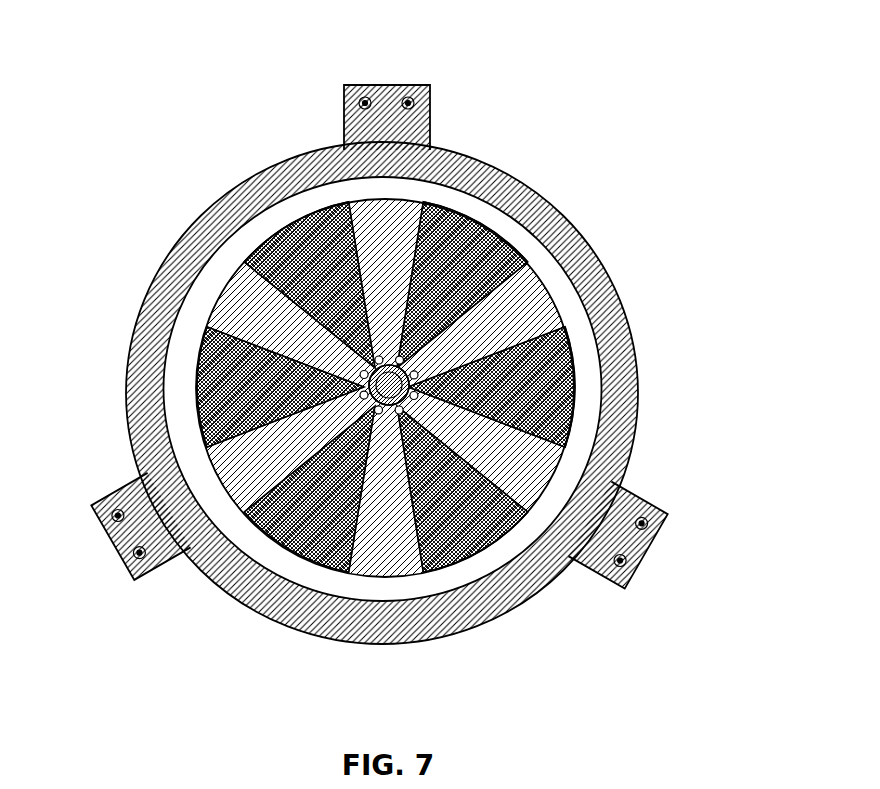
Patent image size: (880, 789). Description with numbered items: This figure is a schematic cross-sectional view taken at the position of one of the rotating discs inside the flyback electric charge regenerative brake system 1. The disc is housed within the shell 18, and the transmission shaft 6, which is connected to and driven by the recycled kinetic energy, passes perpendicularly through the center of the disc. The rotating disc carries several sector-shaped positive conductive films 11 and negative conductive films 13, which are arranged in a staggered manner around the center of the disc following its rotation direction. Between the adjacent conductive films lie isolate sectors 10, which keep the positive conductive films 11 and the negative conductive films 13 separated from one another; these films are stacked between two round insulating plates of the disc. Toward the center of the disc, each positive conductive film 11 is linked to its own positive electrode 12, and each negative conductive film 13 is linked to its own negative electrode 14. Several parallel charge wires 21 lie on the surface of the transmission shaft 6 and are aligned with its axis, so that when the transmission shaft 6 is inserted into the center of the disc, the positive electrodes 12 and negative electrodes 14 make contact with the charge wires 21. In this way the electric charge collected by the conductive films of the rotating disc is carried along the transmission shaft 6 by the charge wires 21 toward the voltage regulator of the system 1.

The flyback electric charge regenerative brake system 1 is at (548, 70).
The transmission shaft 6 is at (404, 407).
The isolate sector 10 is at (383, 214).
The positive conductive film 11 is at (368, 358).
The positive electrode 12 is at (371, 363).
The negative conductive film 13 is at (217, 385).
The negative electrode 14 is at (360, 392).
The shell 18 is at (184, 247).
The charge wire 21 is at (309, 237).